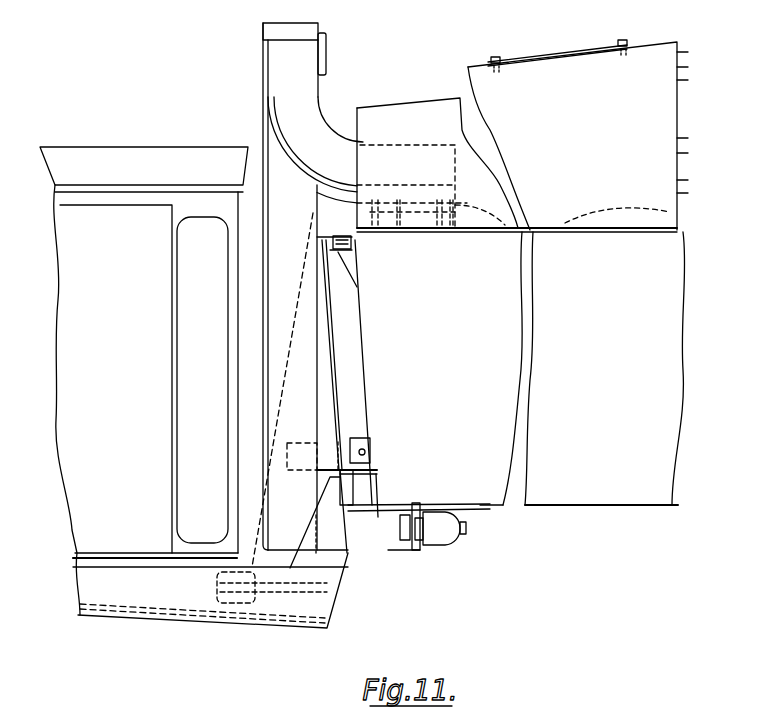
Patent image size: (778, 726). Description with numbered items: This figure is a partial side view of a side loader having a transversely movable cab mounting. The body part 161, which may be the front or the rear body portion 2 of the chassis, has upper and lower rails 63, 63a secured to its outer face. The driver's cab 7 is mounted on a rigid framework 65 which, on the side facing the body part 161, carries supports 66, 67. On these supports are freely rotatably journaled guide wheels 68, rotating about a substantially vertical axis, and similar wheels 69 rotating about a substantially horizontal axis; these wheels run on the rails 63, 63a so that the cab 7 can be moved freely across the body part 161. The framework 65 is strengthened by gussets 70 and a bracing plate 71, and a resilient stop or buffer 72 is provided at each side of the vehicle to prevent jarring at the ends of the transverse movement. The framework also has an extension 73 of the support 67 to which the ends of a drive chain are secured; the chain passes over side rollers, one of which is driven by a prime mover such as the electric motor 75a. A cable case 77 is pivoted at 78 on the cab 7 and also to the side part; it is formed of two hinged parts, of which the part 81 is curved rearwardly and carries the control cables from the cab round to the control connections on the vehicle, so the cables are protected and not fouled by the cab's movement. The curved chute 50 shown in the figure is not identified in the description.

The rear body portion 2 is at (638, 450).
The driver's cab 7 is at (194, 381).
The curved chute 50 is at (303, 133).
The upper rail 63 is at (353, 241).
The lower rail 63a is at (417, 508).
The rigid framework 65 is at (143, 595).
The support 66 is at (329, 237).
The support 67 is at (378, 517).
The guide wheels 68 is at (357, 287).
The wheels 69 is at (348, 442).
The gussets 70 is at (313, 530).
The bracing plate 71 is at (336, 364).
The resilient stop or buffer 72 is at (217, 574).
The extension 73 is at (378, 506).
The electric motor 75a is at (447, 535).
The cable case 77 is at (305, 286).
The pivot 78 is at (280, 592).
The part of cable case 81 is at (268, 282).
The body part 161 is at (600, 498).